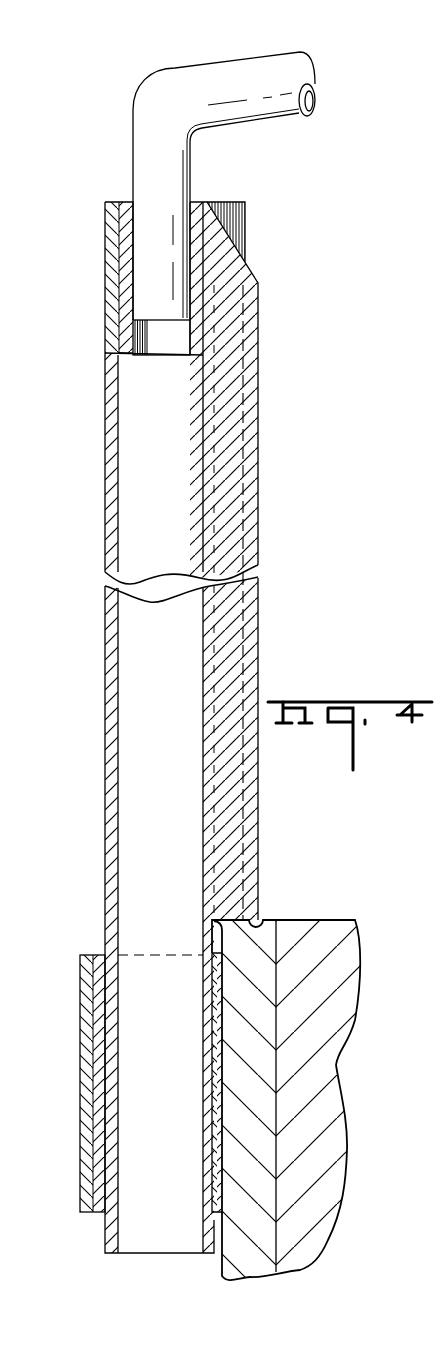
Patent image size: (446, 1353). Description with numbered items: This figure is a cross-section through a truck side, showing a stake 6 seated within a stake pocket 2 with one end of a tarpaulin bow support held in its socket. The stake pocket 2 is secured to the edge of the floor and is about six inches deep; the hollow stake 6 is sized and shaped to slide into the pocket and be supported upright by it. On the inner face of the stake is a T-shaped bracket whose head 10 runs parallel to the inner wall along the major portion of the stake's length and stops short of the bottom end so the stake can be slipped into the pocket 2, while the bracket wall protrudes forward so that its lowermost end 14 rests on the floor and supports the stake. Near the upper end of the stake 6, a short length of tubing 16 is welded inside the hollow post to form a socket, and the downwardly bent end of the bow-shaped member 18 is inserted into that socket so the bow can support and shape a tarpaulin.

The stake pocket 2 is at (82, 1057).
The stake 6 is at (106, 796).
The head of the T 10 is at (258, 396).
The lowermost end 14 is at (257, 929).
The tubing 16 is at (198, 203).
The bow-shaped member 18 is at (262, 70).